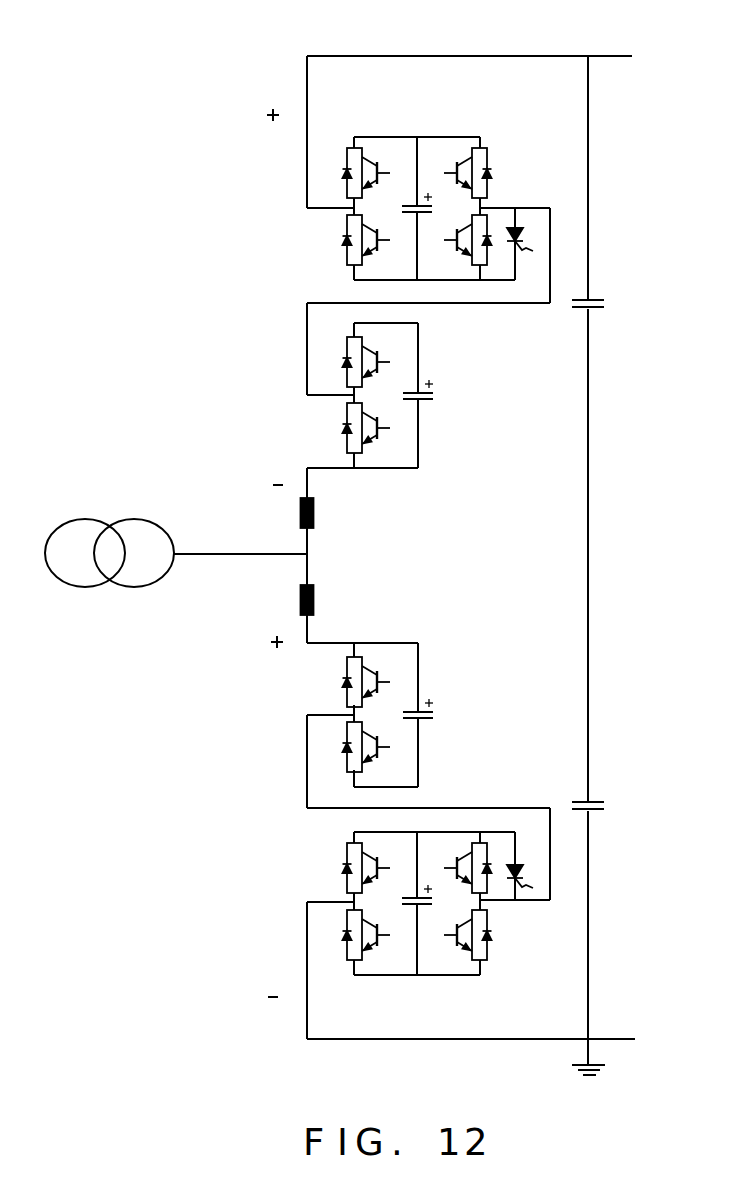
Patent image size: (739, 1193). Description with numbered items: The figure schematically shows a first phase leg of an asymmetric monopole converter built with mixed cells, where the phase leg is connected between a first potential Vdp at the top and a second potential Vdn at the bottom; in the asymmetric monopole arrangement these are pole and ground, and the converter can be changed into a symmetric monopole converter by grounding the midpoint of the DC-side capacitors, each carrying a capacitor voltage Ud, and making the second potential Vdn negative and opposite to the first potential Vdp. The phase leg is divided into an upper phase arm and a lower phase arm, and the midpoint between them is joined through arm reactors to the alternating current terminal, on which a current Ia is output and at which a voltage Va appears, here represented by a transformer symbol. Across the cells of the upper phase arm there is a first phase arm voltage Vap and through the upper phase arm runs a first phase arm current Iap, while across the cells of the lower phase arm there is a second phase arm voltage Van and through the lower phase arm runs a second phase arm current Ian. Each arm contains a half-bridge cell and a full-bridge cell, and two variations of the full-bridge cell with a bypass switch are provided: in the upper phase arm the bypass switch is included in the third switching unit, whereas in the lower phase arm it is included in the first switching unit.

The first potential Vdp is at (469, 37).
The second potential Vdn is at (471, 1060).
The DC link capacitor voltage Ud is at (617, 547).
The first phase arm current Iap is at (322, 83).
The second phase arm current Ian is at (325, 975).
The first phase arm voltage Vap is at (400, 301).
The second phase arm voltage Van is at (400, 807).
The voltage of the AC terminal Va is at (179, 558).
The current output on the AC terminal Ia is at (250, 543).